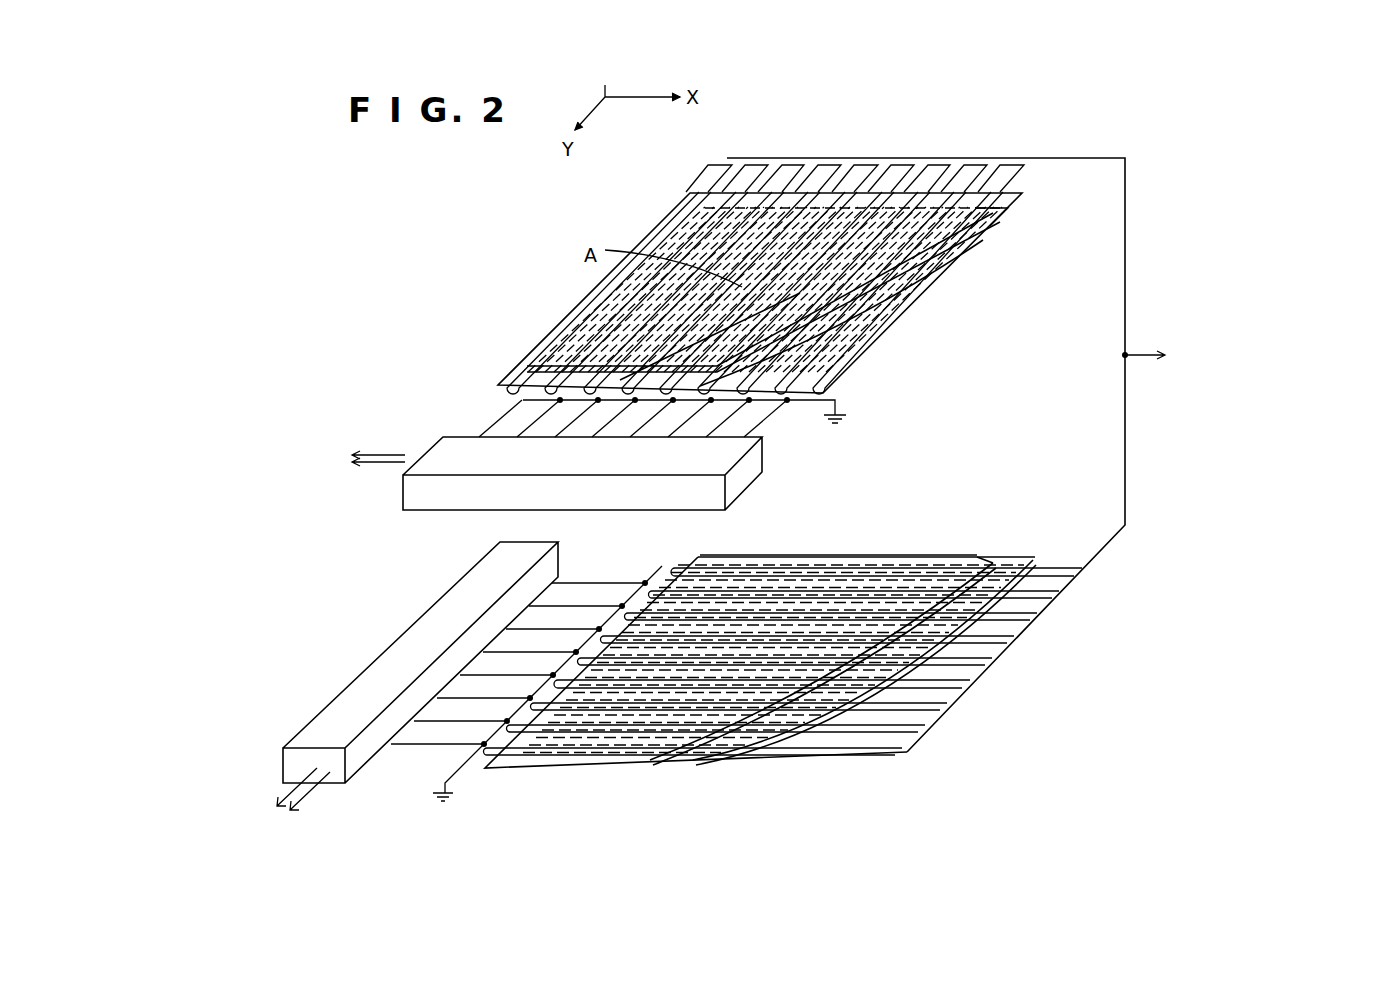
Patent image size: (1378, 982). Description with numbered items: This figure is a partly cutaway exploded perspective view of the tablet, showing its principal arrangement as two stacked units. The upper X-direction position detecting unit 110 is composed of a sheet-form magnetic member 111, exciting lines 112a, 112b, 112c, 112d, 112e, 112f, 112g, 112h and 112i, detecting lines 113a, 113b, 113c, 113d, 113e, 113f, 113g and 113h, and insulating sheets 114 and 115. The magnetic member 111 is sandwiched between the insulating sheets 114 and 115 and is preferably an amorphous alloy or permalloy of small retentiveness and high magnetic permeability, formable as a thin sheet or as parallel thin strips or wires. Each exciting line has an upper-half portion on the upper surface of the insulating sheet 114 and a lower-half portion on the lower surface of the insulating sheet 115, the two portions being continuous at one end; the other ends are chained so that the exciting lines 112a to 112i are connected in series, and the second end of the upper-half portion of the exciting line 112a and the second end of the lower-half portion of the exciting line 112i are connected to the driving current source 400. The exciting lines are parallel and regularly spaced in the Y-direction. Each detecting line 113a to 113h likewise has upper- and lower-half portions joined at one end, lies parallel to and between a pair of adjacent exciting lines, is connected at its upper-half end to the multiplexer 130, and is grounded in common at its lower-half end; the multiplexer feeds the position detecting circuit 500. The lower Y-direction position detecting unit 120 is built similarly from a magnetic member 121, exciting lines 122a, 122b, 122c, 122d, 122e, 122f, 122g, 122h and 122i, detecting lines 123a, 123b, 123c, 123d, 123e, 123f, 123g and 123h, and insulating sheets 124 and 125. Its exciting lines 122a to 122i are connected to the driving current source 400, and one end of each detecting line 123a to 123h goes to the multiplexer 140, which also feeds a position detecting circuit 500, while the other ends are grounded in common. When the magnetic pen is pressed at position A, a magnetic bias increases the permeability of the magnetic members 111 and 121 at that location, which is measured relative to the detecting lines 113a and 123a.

The X-direction position detecting unit 110 is at (900, 307).
The magnetic member 111 is at (913, 247).
The exciting line 112a is at (712, 182).
The exciting line 112b is at (753, 170).
The exciting line 112c is at (787, 182).
The exciting line 112d is at (826, 170).
The exciting line 112e is at (860, 182).
The exciting line 112f is at (899, 170).
The exciting line 112g is at (935, 180).
The exciting line 112h is at (972, 170).
The exciting line 112i is at (1008, 182).
The detecting line 113a is at (500, 422).
The detecting line 113b is at (538, 418).
The detecting line 113c is at (551, 433).
The detecting line 113d is at (604, 427).
The detecting line 113e is at (640, 432).
The detecting line 113f is at (676, 432).
The detecting line 113g is at (760, 437).
The detecting line 113h is at (757, 424).
The insulating sheet 114 is at (518, 372).
The insulating sheet 115 is at (1003, 210).
The Y-direction position detecting unit 120 is at (908, 548).
The magnetic member 121 is at (676, 761).
The exciting line 122a is at (1046, 568).
The exciting line 122b is at (1062, 592).
The exciting line 122c is at (1040, 616).
The exciting line 122d is at (1017, 640).
The exciting line 122e is at (995, 662).
The exciting line 122f is at (972, 684).
The exciting line 122g is at (949, 707).
The exciting line 122h is at (926, 729).
The exciting line 122i is at (872, 756).
The detecting line 123a is at (632, 582).
The detecting line 123b is at (610, 606).
The detecting line 123c is at (589, 629).
The detecting line 123d is at (569, 652).
The detecting line 123e is at (546, 675).
The detecting line 123f is at (523, 698).
The detecting line 123g is at (445, 721).
The detecting line 123h is at (460, 744).
The insulating sheet 124 is at (838, 557).
The insulating sheet 125 is at (708, 761).
The multiplexer 130 is at (762, 472).
The multiplexer 140 is at (420, 619).
The driving current source 400 is at (1221, 359).
The position detecting circuit 500 is at (305, 647).